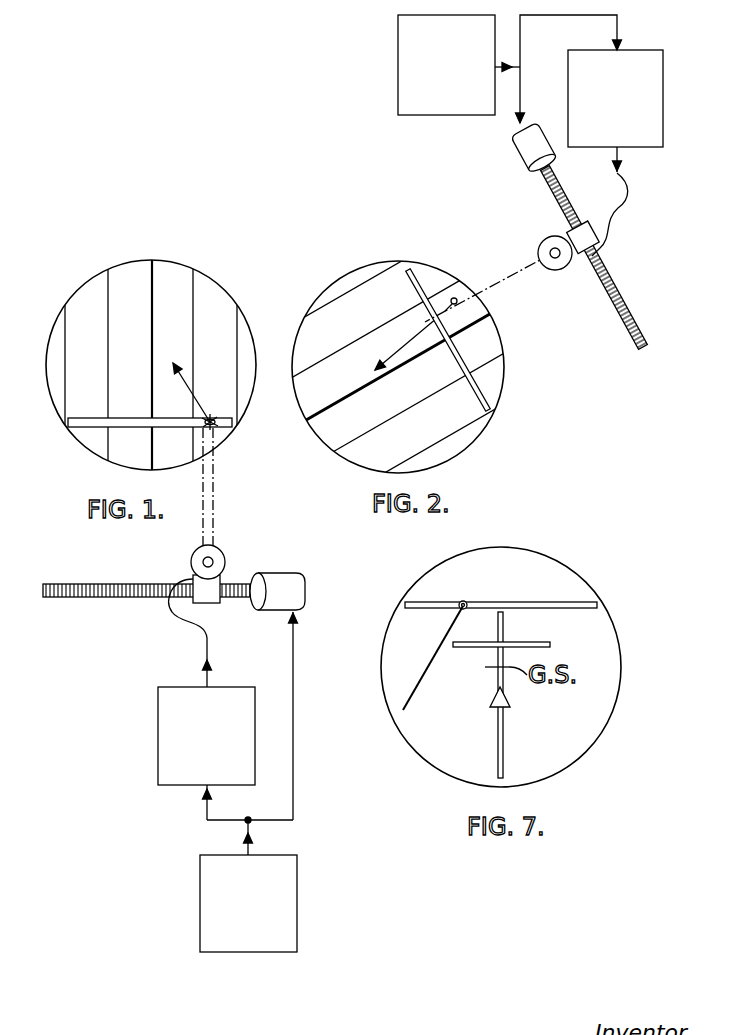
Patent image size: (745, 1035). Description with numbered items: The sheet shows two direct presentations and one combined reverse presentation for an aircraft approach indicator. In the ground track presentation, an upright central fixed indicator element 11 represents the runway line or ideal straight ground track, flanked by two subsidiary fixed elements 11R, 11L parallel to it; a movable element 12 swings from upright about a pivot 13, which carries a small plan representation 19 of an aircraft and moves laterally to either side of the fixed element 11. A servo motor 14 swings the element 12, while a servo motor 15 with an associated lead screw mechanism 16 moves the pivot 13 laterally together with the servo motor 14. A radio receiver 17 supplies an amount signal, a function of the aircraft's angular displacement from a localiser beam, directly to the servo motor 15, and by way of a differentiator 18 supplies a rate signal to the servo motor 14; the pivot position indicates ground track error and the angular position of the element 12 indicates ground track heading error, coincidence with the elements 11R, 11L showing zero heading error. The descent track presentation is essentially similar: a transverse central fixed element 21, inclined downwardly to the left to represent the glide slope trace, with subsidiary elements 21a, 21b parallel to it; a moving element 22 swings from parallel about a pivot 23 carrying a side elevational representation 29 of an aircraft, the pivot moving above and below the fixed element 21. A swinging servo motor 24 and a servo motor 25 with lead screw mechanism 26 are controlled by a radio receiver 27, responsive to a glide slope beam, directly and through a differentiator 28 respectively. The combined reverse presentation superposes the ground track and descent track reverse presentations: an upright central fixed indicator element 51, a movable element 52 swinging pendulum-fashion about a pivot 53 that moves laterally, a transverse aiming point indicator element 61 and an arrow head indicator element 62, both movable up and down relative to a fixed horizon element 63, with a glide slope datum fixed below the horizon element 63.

In FIG. 1, the fixed indicator element 11 is at (153, 274).
In FIG. 1, the subsidiary fixed element 11L is at (67, 320).
In FIG. 1, the subsidiary fixed element 11R is at (235, 333).
In FIG. 1, the movable element 12 is at (189, 386).
In FIG. 1, the pivot 13 is at (210, 422).
In FIG. 1, the servo motor 14 is at (202, 557).
In FIG. 1, the servo motor 15 is at (280, 575).
In FIG. 1, the lead screw mechanism 16 is at (212, 598).
In FIG. 1, the radio receiver 17 is at (203, 900).
In FIG. 1, the differentiator 18 is at (160, 740).
In FIG. 1, the plan representation of an aircraft 19 is at (209, 418).
In FIG. 2, the fixed element 21 is at (345, 398).
In FIG. 2, the subsidiary fixed element 21a is at (332, 355).
In FIG. 2, the subsidiary fixed element 21b is at (410, 458).
In FIG. 2, the moving element 22 is at (410, 340).
In FIG. 2, the pivot 23 is at (453, 310).
In FIG. 2, the servo motor 24 is at (549, 243).
In FIG. 2, the servo motor 25 is at (523, 157).
In FIG. 2, the lead screw mechanism 26 is at (562, 193).
In FIG. 2, the radio receiver 27 is at (398, 84).
In FIG. 2, the differentiator 28 is at (576, 88).
In FIG. 2, the side elevational representation of an aircraft 29 is at (444, 308).
In FIG. 7, the fixed indicator element 51 is at (498, 740).
In FIG. 7, the movable element 52 is at (437, 650).
In FIG. 7, the pivot 53 is at (464, 601).
In FIG. 7, the aiming point indicator element 61 is at (540, 642).
In FIG. 7, the arrow head indicator element 62 is at (507, 700).
In FIG. 7, the horizon element 63 is at (530, 602).